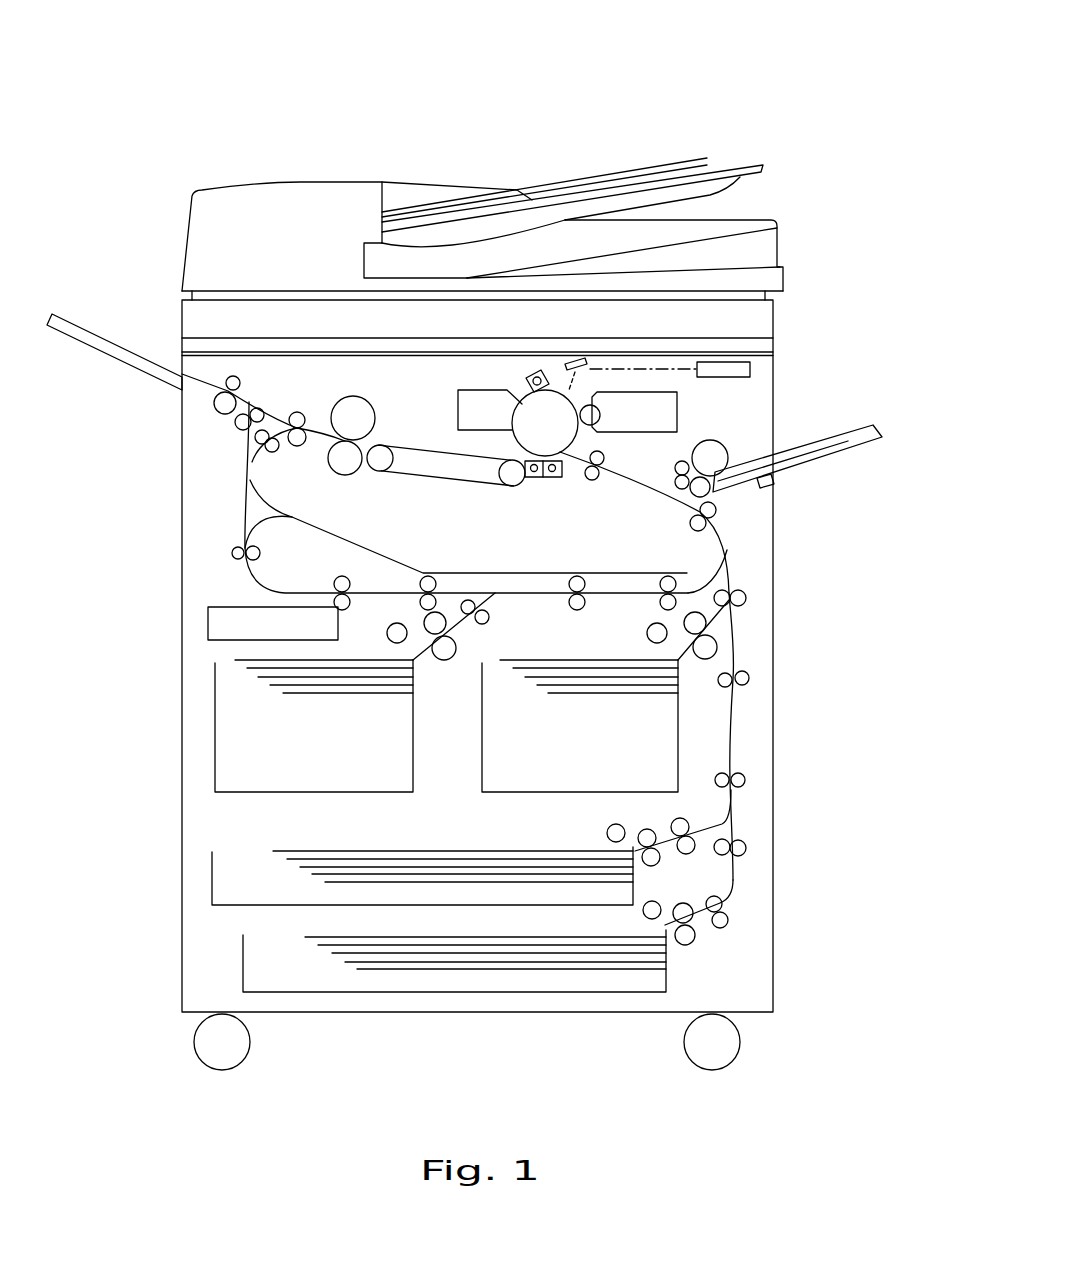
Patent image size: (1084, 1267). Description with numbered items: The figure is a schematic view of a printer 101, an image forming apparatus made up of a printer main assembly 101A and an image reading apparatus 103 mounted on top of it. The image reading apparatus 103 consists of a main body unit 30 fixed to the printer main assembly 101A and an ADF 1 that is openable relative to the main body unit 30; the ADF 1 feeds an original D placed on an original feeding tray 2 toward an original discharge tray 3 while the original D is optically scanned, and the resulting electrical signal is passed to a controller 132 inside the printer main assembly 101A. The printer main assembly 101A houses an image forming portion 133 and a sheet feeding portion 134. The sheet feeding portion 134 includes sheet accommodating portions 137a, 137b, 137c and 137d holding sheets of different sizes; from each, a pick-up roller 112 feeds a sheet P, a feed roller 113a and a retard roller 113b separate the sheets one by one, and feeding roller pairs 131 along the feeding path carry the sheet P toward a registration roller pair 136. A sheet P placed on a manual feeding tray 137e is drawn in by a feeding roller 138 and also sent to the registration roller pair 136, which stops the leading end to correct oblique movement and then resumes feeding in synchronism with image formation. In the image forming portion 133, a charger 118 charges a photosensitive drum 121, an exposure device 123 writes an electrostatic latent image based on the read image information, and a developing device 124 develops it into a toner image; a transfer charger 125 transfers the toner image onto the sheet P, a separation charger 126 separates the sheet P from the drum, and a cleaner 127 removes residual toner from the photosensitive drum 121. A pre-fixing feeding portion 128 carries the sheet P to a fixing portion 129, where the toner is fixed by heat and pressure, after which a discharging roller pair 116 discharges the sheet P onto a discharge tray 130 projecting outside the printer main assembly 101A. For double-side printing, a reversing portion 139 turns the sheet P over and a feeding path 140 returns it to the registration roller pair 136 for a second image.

The printer 101 is at (432, 82).
The image reading apparatus 103 is at (893, 223).
The ADF (automatic document feeder) 1 is at (806, 242).
The original feeding tray 2 is at (745, 160).
The original D is at (665, 158).
The original discharge tray 3 is at (760, 218).
The main body unit 30 is at (800, 315).
The printer main assembly 101A is at (798, 381).
The charger 118 is at (537, 371).
The exposure device 123 is at (752, 370).
The photosensitive drum 121 is at (518, 395).
The cleaner 127 is at (458, 410).
The fixing portion 129 is at (343, 407).
The developing device 124 is at (663, 413).
The image forming portion 133 is at (498, 454).
The pre-fixing feeding portion 128 is at (452, 455).
The reversing portion 139 is at (350, 522).
The transfer charger 125 is at (558, 477).
The separation charger 126 is at (537, 478).
The registration roller pair 136 is at (599, 478).
The feeding roller 138 is at (716, 452).
The manual feeding tray 137e is at (852, 450).
The sheet feeding portion 134 is at (752, 570).
The discharge tray 130 is at (73, 343).
The discharging roller pair 116 is at (222, 414).
The feeding path 140 is at (218, 576).
The controller 132 is at (208, 627).
The feeding roller pair 131 is at (484, 613).
The pick-up roller 112 is at (388, 635).
The feed roller 113a is at (432, 618).
The retard roller 113b is at (450, 662).
The sheet P is at (550, 658).
The sheet accommodating portion 137c is at (215, 733).
The sheet accommodating portion 137d is at (679, 732).
The sheet accommodating portion 137b is at (212, 882).
The sheet accommodating portion 137a is at (243, 963).